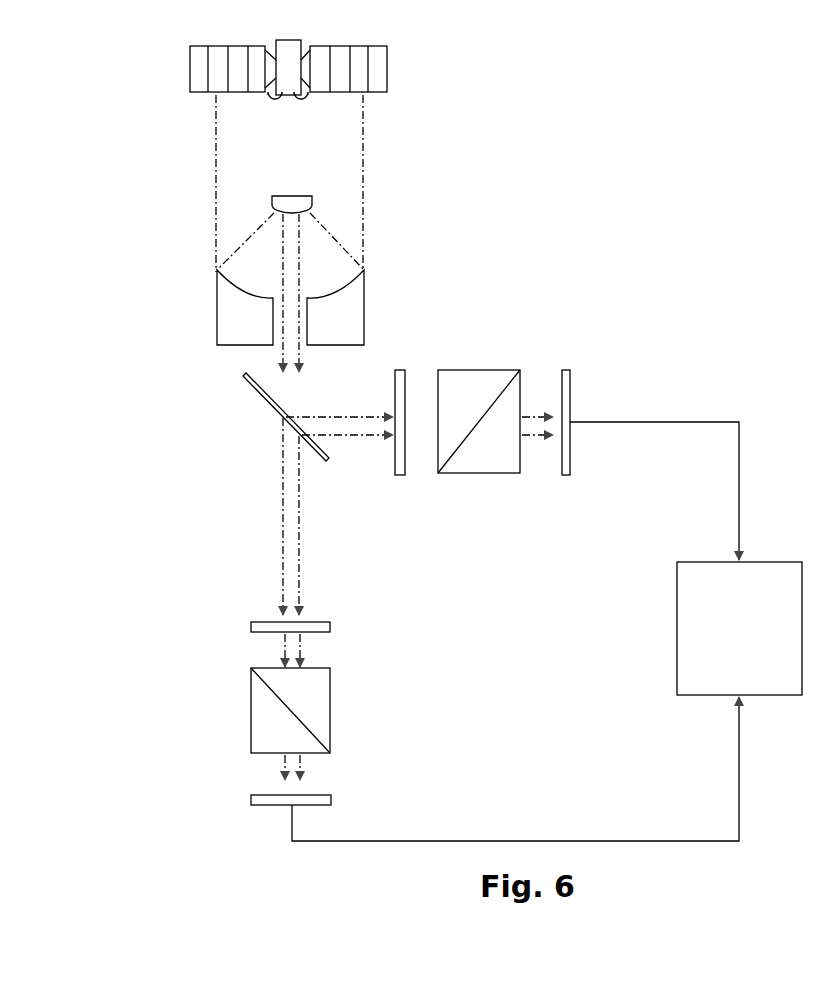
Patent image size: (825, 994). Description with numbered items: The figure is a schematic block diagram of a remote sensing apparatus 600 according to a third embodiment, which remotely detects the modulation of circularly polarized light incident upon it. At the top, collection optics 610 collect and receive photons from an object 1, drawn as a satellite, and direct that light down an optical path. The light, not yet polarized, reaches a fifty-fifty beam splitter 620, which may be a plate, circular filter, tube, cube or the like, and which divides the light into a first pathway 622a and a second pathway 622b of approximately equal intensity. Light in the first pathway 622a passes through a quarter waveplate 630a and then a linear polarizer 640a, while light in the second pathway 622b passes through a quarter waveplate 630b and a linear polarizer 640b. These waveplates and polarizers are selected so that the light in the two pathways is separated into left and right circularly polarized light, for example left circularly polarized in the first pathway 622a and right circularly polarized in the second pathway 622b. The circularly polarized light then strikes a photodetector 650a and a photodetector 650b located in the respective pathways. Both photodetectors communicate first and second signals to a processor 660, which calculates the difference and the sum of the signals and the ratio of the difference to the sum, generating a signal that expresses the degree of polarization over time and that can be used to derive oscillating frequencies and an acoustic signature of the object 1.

The object 1 is at (389, 72).
The remote sensing apparatus 600 is at (702, 195).
The collection optics 610 is at (190, 323).
The 50/50 beam splitter 620 is at (260, 407).
The first pathway 622a is at (270, 513).
The second pathway 622b is at (338, 432).
The quarter waveplate 630a is at (251, 627).
The quarter waveplate 630b is at (403, 370).
The linear polarizer 640a is at (251, 710).
The linear polarizer 640b is at (480, 370).
The photodetector 650a is at (251, 800).
The photodetector 650b is at (565, 370).
The processor 660 is at (677, 688).